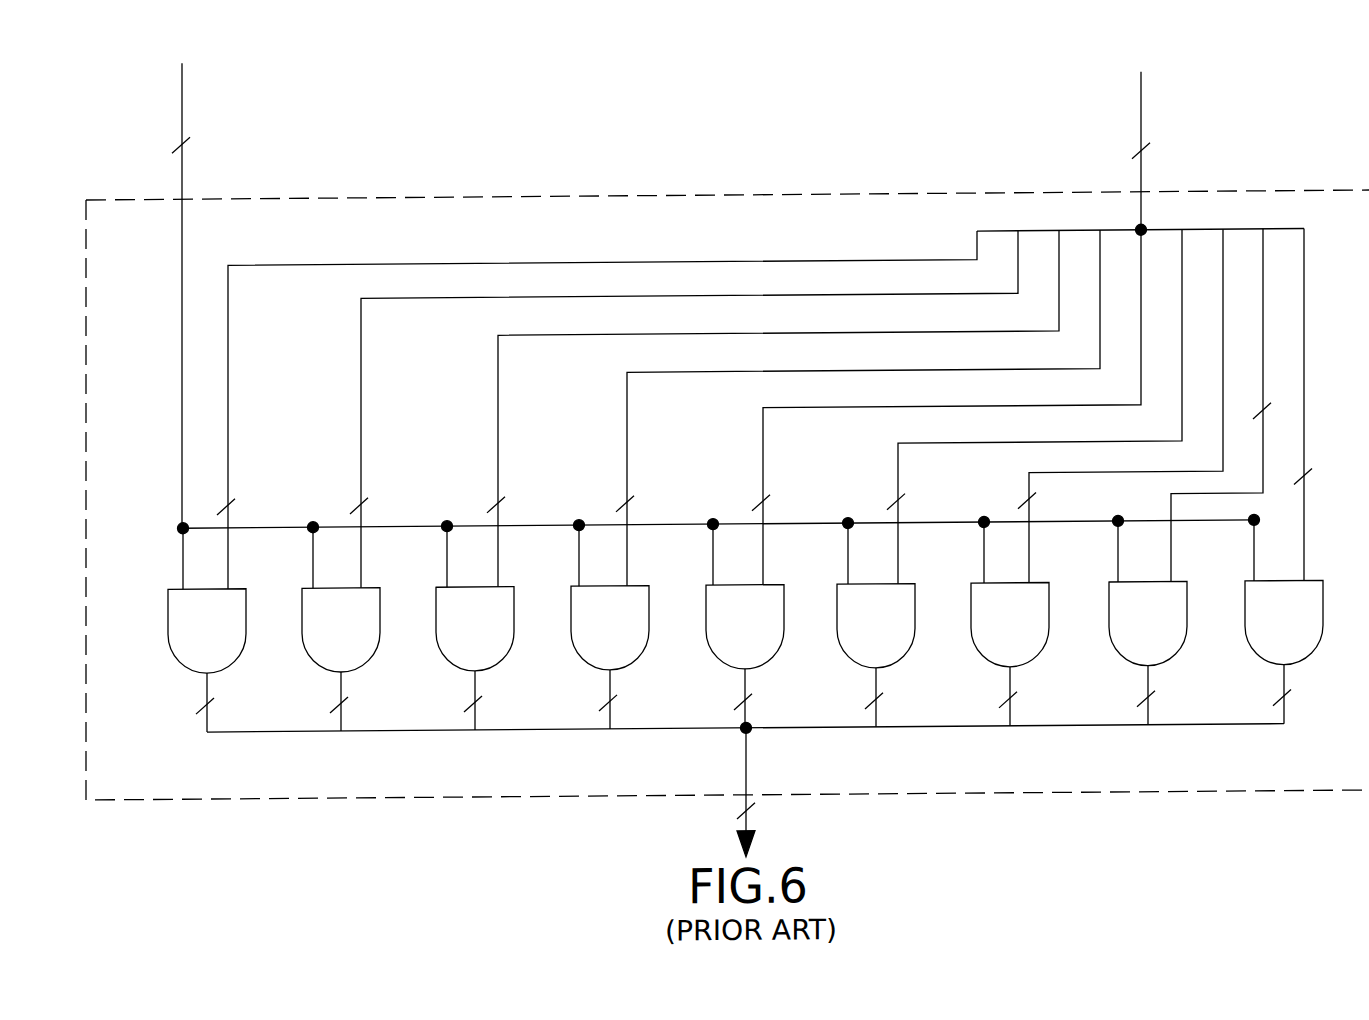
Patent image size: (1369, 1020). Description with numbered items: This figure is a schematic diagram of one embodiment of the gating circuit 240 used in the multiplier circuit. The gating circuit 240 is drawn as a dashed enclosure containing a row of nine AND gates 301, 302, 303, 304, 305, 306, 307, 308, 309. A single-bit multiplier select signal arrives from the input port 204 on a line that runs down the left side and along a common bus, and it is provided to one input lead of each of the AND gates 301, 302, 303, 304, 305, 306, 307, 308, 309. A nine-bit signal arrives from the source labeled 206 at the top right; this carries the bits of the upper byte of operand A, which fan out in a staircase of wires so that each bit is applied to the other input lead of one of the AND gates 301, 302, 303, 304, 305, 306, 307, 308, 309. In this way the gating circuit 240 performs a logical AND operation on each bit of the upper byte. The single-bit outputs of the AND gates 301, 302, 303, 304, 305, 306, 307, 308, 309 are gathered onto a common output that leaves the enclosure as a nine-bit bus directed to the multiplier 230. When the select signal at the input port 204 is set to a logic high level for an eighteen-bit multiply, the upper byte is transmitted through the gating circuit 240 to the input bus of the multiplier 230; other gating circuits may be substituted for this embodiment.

The gating circuit 240 is at (647, 199).
The input port 204 is at (713, 291).
The input signal source (9-bit) 206 is at (1140, 153).
The multiplier 230 is at (745, 789).
The AND gate 301 is at (184, 634).
The AND gate 302 is at (318, 634).
The AND gate 303 is at (452, 634).
The AND gate 304 is at (587, 634).
The AND gate 305 is at (722, 634).
The AND gate 306 is at (853, 634).
The AND gate 307 is at (987, 634).
The AND gate 308 is at (1125, 634).
The AND gate 309 is at (1261, 634).